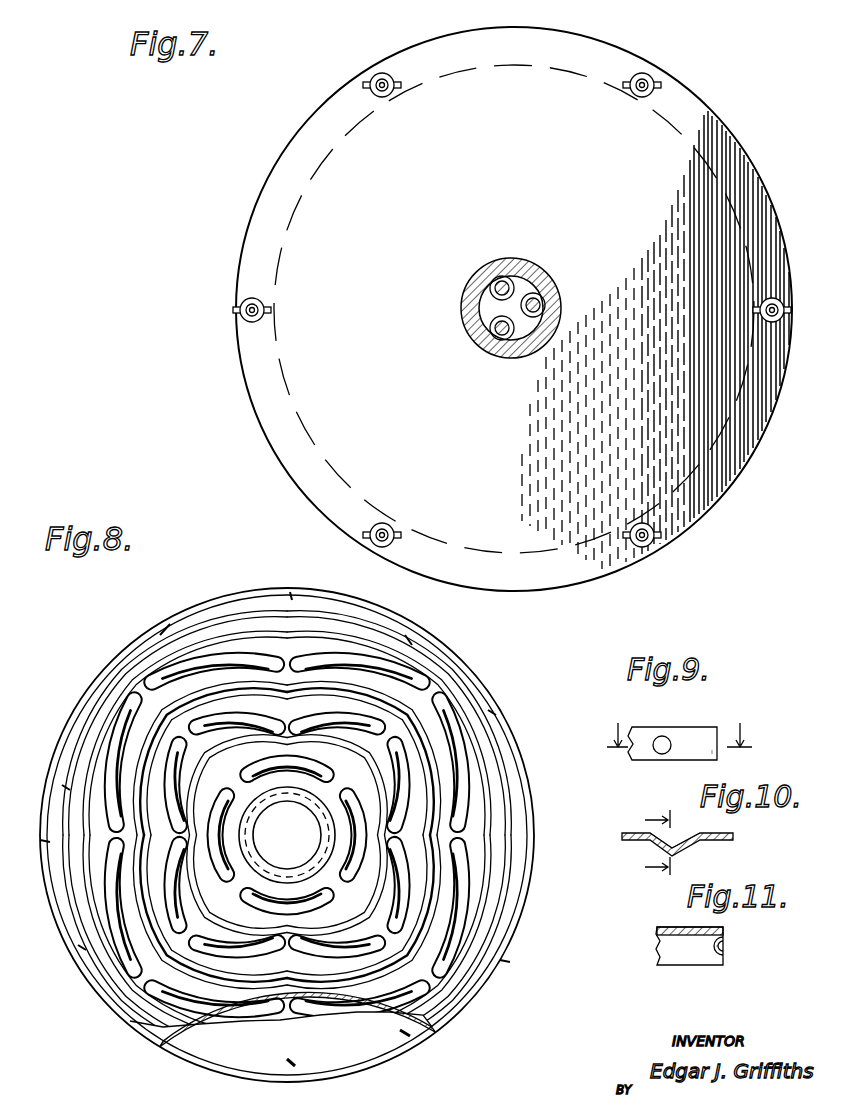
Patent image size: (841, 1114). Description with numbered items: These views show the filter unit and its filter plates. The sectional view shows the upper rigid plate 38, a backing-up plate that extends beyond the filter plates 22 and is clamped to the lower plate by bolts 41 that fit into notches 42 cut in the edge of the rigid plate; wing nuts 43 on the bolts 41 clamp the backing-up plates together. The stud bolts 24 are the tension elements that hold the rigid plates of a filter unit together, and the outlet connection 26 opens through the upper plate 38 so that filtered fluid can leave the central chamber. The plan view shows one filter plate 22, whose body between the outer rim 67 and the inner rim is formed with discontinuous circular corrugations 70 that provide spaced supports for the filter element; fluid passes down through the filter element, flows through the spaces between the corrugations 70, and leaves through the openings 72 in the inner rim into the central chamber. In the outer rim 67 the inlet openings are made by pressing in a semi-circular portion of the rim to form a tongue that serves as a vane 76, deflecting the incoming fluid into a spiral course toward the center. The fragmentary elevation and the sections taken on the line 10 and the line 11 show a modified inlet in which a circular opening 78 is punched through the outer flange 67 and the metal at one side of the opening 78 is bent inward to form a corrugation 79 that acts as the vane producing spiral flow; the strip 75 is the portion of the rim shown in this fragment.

In FIG. 9, the section line 10- 10 is at (683, 725).
In FIG. 10, the section line 11- 11 is at (648, 843).
In FIG. 8, the filter plate 22 is at (484, 682).
In FIG. 10, the filter plate 22 is at (716, 838).
In FIG. 11, the filter plate 22 is at (663, 927).
In FIG. 7, the stud bolt 24 is at (500, 339).
In FIG. 7, the outlet connection 26 is at (541, 344).
In FIG. 7, the upper rigid plate 38 is at (700, 180).
In FIG. 7, the bolt 41 is at (636, 546).
In FIG. 7, the notch 42 is at (656, 546).
In FIG. 7, the wing nut 43 is at (668, 535).
In FIG. 9, the outer rim 67 is at (700, 756).
In FIG. 11, the outer rim 67 is at (723, 957).
In FIG. 8, the discontinuous circular corrugations 70 is at (166, 962).
In FIG. 8, the opening 72 is at (340, 1040).
In FIG. 9, the strip 75 is at (680, 740).
In FIG. 8, the vane 76 is at (498, 972).
In FIG. 9, the circular opening 78 is at (661, 752).
In FIG. 10, the circular opening 78 is at (662, 846).
In FIG. 10, the corrugation 79 is at (690, 834).
In FIG. 11, the corrugation 79 is at (714, 952).